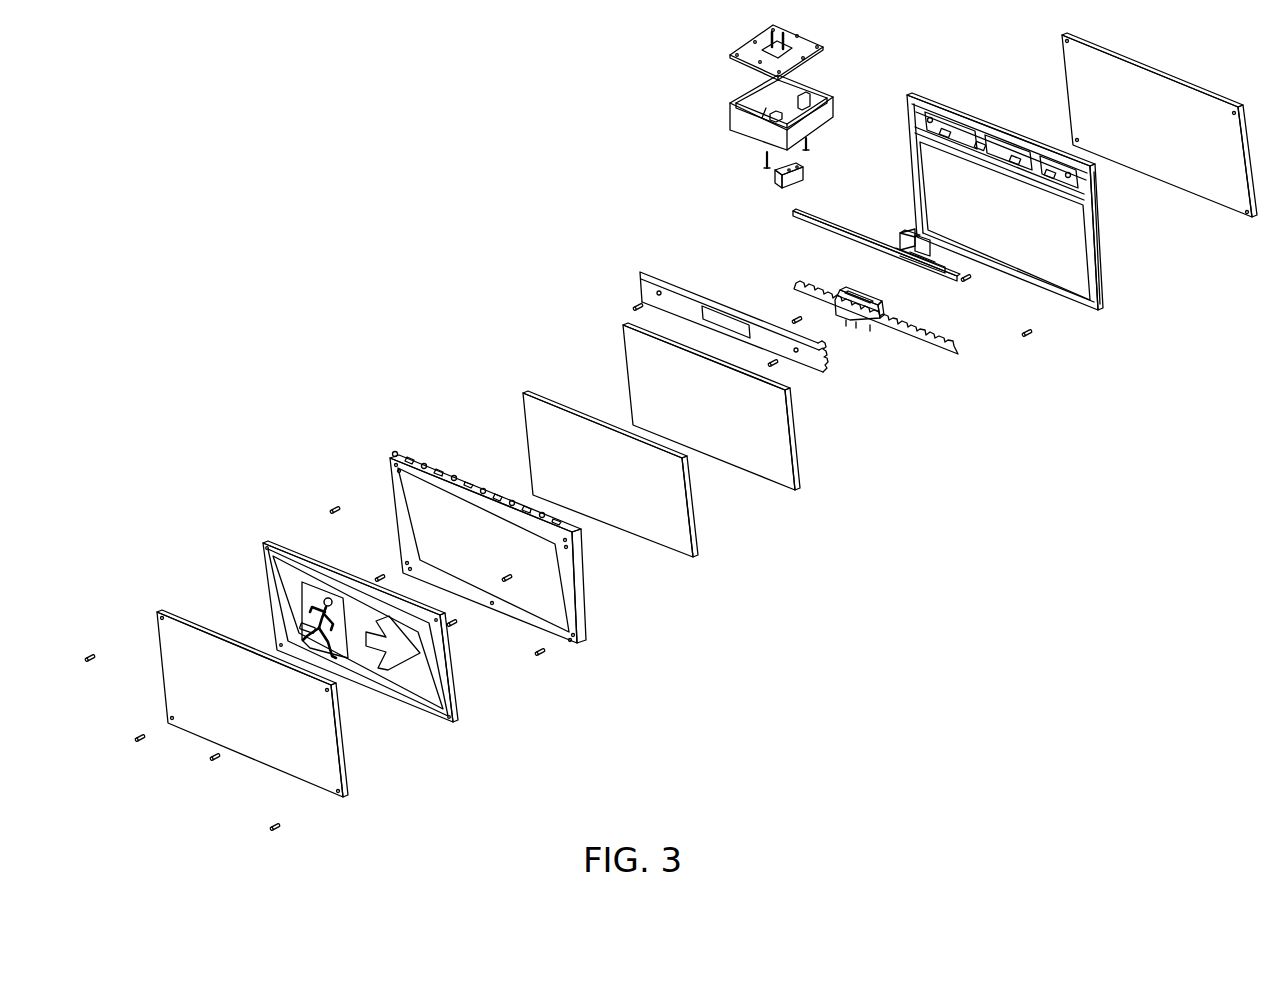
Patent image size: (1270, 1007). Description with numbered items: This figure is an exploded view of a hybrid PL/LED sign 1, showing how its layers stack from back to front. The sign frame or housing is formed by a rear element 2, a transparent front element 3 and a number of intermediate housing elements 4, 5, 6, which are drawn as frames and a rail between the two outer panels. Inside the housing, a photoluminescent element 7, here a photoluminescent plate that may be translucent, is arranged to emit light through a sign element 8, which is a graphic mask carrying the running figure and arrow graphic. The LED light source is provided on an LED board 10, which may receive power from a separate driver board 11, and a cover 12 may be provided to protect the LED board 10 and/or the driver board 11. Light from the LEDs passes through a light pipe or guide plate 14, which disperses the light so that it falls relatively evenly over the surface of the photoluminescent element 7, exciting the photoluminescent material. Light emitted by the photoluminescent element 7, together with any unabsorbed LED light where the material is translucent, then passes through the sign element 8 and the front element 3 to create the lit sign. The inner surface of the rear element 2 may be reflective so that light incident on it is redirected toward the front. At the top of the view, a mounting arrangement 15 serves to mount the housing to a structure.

The hybrid PL/LED sign 1 is at (336, 449).
The rear element 2 is at (1070, 65).
The transparent front element 3 is at (332, 757).
The intermediate housing element 4 is at (583, 589).
The intermediate housing element 5 is at (1098, 253).
The intermediate housing element 6 is at (640, 283).
The photoluminescent element 7 is at (693, 510).
The sign element 8 is at (455, 678).
The LED board 10 is at (797, 210).
The driver board 11 is at (938, 255).
The cover 12 is at (872, 333).
The light pipe or guide plate 14 is at (793, 437).
The mounting arrangement 15 is at (716, 92).